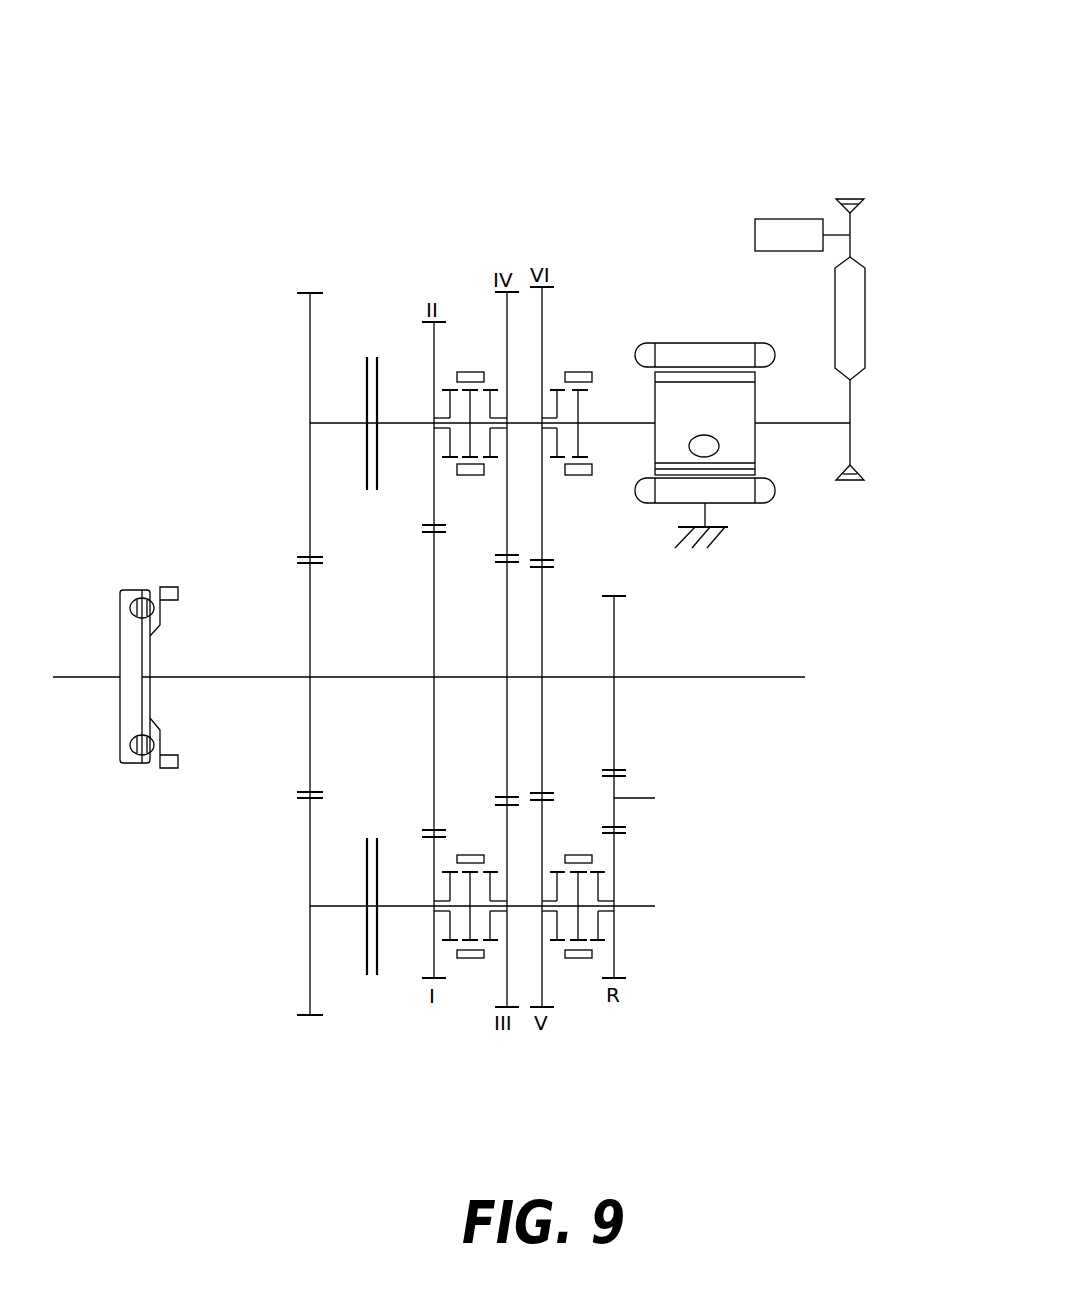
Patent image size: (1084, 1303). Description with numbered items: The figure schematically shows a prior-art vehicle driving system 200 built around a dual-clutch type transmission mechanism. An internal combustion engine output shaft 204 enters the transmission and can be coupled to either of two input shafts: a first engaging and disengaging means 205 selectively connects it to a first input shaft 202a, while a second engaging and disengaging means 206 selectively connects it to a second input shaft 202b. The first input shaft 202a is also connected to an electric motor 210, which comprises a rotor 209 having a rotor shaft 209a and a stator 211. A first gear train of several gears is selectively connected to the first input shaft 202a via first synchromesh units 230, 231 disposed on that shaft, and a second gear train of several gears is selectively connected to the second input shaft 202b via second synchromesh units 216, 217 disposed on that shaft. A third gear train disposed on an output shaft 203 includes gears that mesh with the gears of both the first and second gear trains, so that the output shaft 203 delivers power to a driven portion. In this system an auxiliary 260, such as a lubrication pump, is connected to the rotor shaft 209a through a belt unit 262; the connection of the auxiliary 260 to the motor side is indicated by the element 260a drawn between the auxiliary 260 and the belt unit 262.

The vehicle driving system 200 is at (613, 98).
The first input shaft 202a is at (410, 424).
The second input shaft 202b is at (405, 907).
The output shaft 203 is at (784, 677).
The internal combustion engine output shaft 204 is at (69, 680).
The first engaging and disengaging means 205 is at (375, 334).
The second engaging and disengaging means 206 is at (346, 945).
The rotor 209 is at (738, 443).
The rotor shaft 209a is at (628, 423).
The electric motor 210 is at (698, 322).
The stator 211 is at (675, 493).
The second synchromesh unit 216 is at (468, 978).
The second synchromesh unit 217 is at (578, 978).
The first synchromesh unit 230 is at (473, 352).
The first synchromesh unit 231 is at (578, 352).
The auxiliary 260 is at (790, 238).
The terminal 260a is at (835, 232).
The belt unit 262 is at (877, 313).